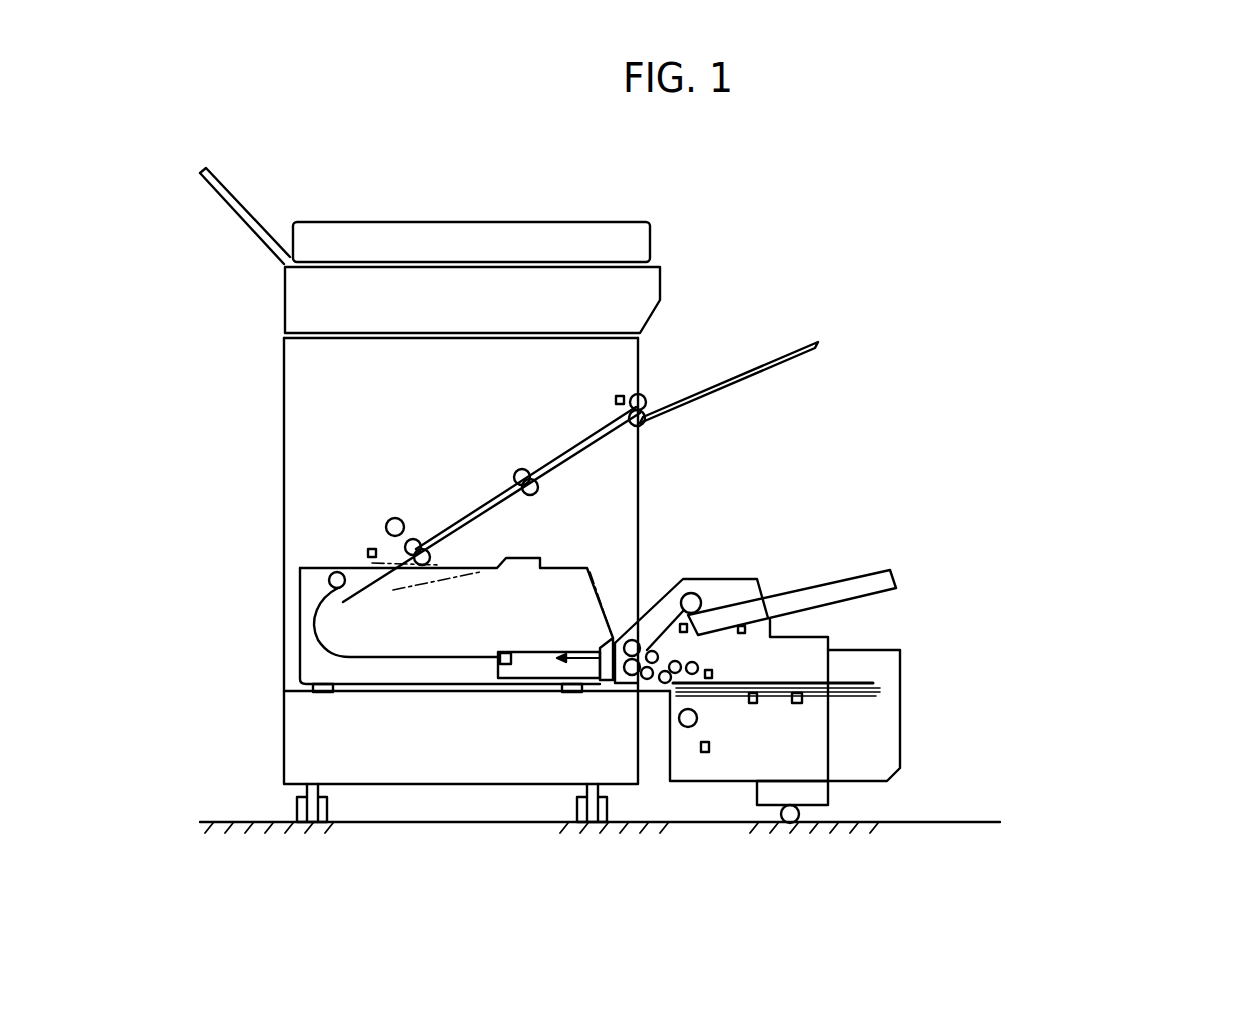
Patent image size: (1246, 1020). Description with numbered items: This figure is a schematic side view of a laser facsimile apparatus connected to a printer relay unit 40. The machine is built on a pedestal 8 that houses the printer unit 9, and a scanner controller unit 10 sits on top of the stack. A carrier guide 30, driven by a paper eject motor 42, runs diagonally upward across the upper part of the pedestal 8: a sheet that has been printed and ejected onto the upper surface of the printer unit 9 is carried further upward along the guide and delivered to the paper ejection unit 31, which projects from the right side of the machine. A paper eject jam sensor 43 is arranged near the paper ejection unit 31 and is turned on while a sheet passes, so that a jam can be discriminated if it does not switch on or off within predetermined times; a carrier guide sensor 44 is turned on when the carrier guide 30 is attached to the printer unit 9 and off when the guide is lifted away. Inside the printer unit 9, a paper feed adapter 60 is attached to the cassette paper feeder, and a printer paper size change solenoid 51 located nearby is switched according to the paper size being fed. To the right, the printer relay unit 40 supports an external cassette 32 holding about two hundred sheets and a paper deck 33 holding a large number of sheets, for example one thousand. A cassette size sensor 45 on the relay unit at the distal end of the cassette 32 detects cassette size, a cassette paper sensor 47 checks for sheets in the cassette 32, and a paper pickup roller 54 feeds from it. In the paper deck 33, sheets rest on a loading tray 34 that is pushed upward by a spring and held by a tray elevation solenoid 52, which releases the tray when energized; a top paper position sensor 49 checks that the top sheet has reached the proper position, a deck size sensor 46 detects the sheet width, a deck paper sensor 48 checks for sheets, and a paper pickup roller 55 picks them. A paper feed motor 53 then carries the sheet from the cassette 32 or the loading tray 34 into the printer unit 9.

The pedestal 8 is at (284, 383).
The printer unit 9 is at (403, 640).
The scanner controller unit 10 is at (408, 222).
The carrier guide 30 is at (467, 517).
The paper ejection unit 31 is at (660, 407).
The cassette 32 is at (884, 575).
The paper deck 33 is at (868, 713).
The loading tray 34 is at (807, 697).
The printer relay unit 40 is at (562, 462).
The paper eject motor 42 is at (387, 518).
The paper eject jam sensor 43 is at (621, 396).
The carrier guide sensor 44 is at (367, 553).
The cassette size sensor 45 is at (637, 640).
The deck size sensor 46 is at (797, 703).
The cassette paper sensor 47 is at (745, 628).
The deck paper sensor 48 is at (753, 703).
The top paper position sensor 49 is at (714, 673).
The printer paper size change solenoid 51 is at (505, 653).
The tray elevation solenoid 52 is at (705, 752).
The paper feed motor 53 is at (698, 719).
The paper pickup roller 54 is at (701, 611).
The paper pickup roller 55 is at (699, 667).
The paper feed adapter 60 is at (560, 690).